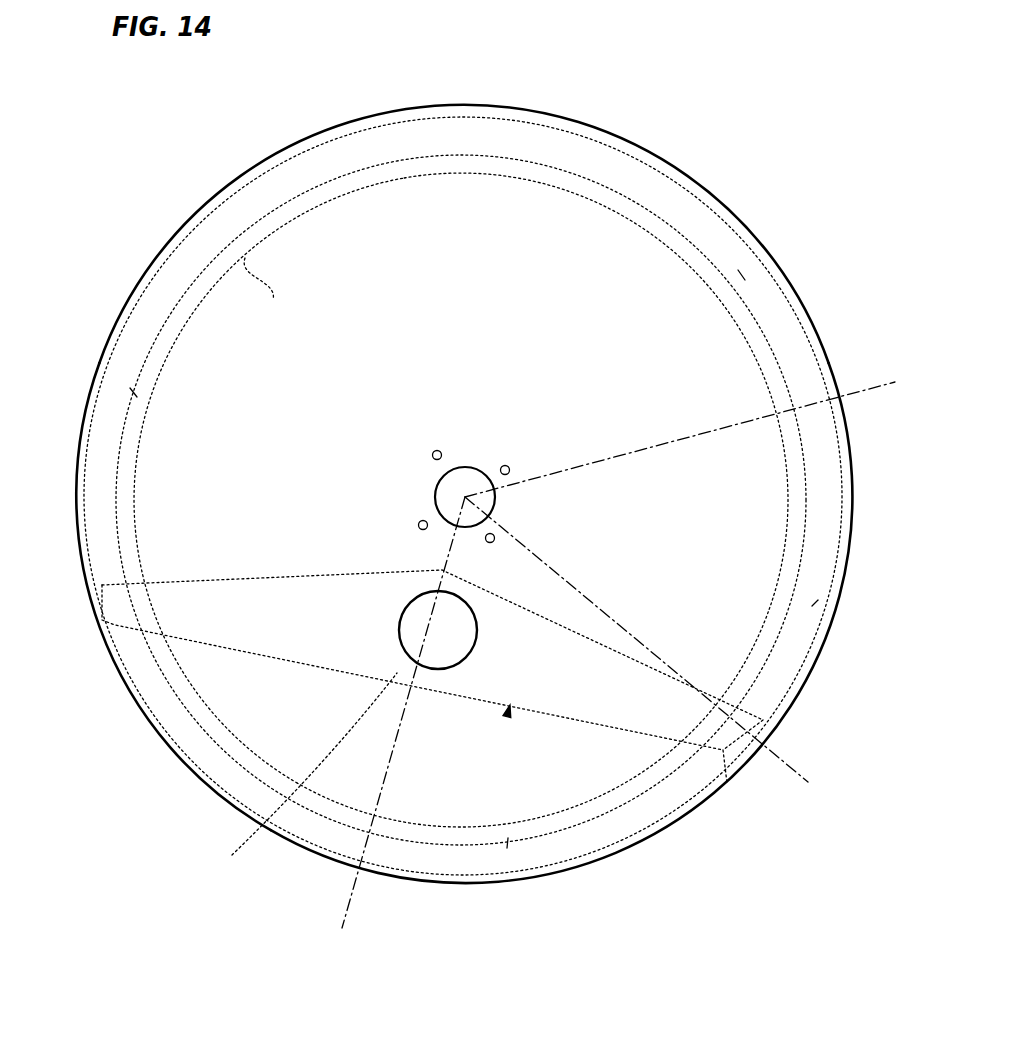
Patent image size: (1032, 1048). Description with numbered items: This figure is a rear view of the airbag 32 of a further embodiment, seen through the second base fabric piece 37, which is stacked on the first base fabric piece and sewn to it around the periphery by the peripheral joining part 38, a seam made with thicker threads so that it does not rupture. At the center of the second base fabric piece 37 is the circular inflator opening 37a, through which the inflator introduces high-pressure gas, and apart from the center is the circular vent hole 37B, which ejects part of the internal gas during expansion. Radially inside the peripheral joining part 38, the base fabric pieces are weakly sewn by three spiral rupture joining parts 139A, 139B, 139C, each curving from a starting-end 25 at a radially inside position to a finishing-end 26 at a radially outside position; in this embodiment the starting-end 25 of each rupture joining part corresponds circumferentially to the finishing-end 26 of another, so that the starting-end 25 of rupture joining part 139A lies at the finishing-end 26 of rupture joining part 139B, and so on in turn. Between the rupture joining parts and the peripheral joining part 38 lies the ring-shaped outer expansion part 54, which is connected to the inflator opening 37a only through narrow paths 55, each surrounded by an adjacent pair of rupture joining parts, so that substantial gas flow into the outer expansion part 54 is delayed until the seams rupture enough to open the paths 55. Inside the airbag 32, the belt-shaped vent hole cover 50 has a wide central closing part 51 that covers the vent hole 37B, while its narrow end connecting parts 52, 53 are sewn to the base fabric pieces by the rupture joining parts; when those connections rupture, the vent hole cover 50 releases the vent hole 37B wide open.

The airbag 32 is at (575, 108).
The second base fabric piece 37 is at (712, 193).
The peripheral joining part 38 is at (145, 712).
The finishing-end 26 is at (217, 242).
The rupture joining part 139A is at (597, 192).
The rupture joining part 139B is at (595, 803).
The rupture joining part 139C is at (197, 292).
The path 55 is at (738, 270).
The starting-end 25 is at (273, 301).
The inflator opening 37a is at (484, 474).
The vent hole 37B is at (404, 612).
The connecting part 53 is at (112, 613).
The connecting part 52 is at (727, 783).
The outer expansion part 54 is at (818, 600).
The closing part 51 is at (305, 778).
The vent hole cover 50 is at (508, 712).